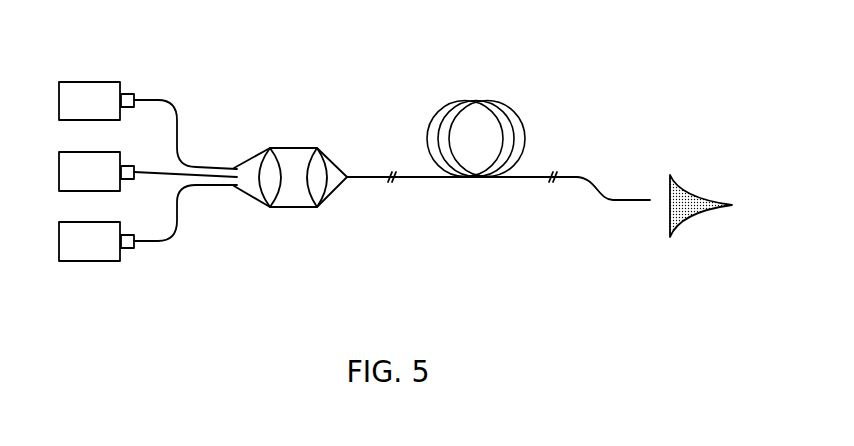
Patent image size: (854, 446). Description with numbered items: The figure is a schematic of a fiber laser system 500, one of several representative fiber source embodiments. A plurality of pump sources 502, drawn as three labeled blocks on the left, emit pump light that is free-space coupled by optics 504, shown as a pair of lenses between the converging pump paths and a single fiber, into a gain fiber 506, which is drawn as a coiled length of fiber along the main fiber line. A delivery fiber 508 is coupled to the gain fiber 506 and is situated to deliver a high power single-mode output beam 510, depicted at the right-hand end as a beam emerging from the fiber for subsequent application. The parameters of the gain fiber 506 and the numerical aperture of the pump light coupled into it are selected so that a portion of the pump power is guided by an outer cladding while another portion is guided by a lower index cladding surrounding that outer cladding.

The fiber laser system 500 is at (520, 267).
The pump sources 502 is at (96, 171).
The optics 504 is at (330, 130).
The gain fiber 506 is at (478, 102).
The delivery fiber 508 is at (613, 200).
The high power single-mode output beam 510 is at (695, 205).